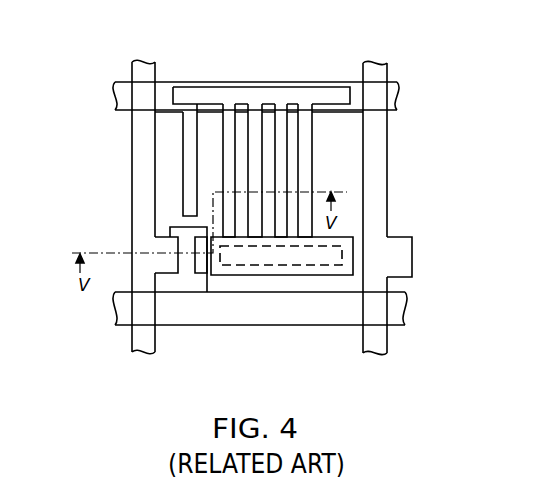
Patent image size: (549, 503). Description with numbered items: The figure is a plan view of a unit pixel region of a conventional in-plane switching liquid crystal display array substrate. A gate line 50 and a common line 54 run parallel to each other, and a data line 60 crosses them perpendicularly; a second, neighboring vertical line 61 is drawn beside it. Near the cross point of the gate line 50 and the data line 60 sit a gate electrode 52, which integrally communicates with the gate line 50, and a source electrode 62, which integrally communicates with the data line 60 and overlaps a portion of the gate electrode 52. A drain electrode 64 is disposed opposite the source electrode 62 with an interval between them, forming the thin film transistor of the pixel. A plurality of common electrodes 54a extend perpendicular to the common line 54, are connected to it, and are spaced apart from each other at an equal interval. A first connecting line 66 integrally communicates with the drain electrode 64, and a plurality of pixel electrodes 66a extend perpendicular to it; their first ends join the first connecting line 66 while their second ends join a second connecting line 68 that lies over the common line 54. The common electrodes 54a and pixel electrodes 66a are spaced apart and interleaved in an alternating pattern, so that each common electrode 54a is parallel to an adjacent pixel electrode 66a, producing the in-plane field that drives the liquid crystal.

The gate line 50 is at (279, 320).
The gate electrode 52 is at (170, 230).
The common line 54 is at (397, 95).
The common electrodes 54a is at (190, 147).
The data line 60 is at (140, 198).
The gate line 61 is at (383, 124).
The source electrode 62 is at (160, 267).
The drain electrode 64 is at (200, 267).
The first connecting line 66 is at (343, 257).
The pixel electrodes 66a is at (283, 152).
The second connecting line 68 is at (201, 97).